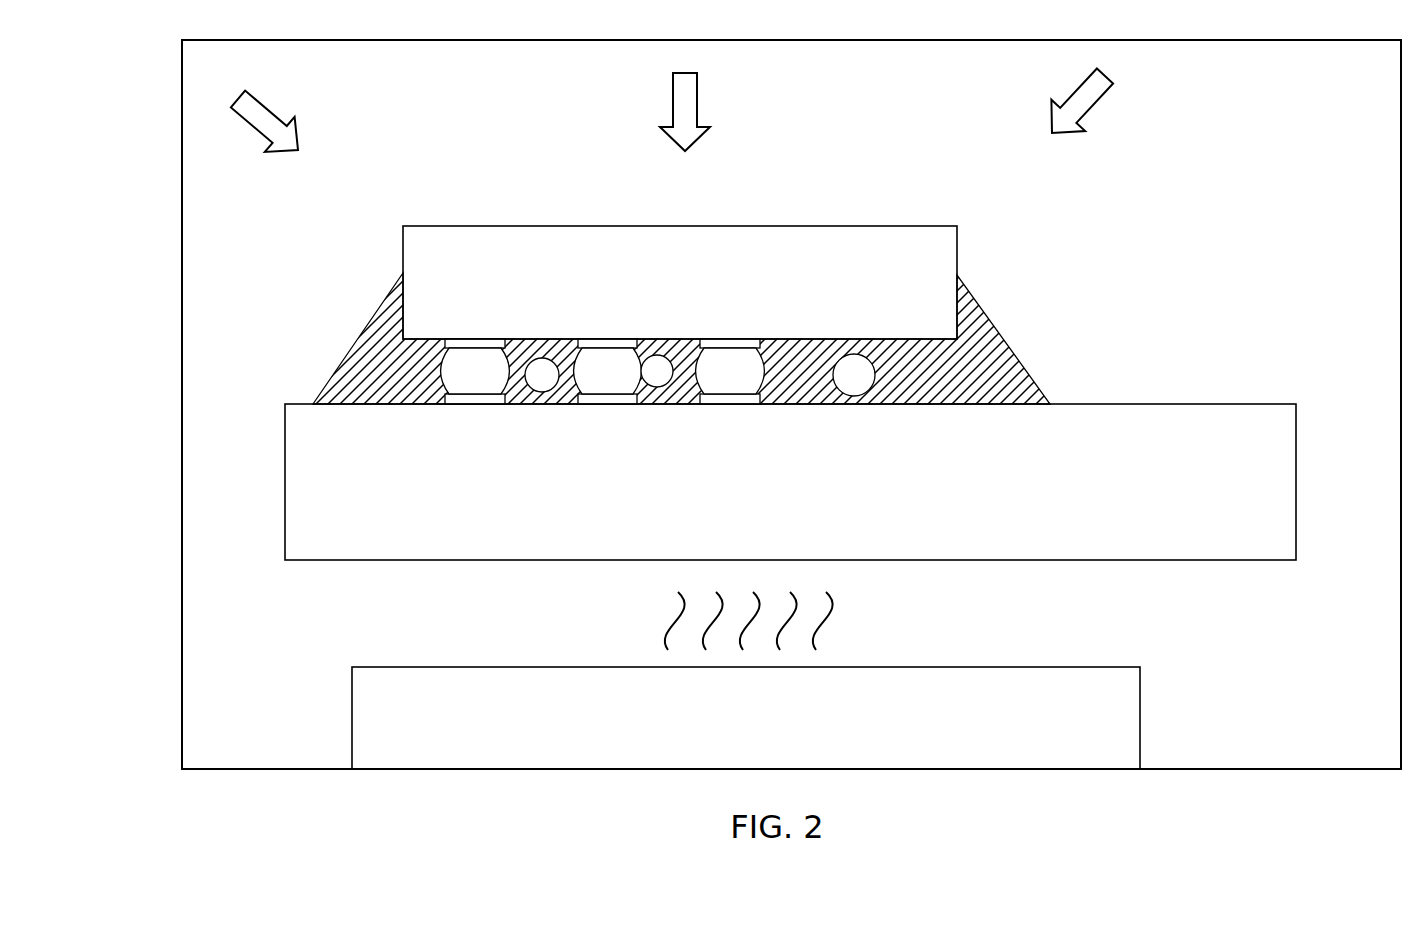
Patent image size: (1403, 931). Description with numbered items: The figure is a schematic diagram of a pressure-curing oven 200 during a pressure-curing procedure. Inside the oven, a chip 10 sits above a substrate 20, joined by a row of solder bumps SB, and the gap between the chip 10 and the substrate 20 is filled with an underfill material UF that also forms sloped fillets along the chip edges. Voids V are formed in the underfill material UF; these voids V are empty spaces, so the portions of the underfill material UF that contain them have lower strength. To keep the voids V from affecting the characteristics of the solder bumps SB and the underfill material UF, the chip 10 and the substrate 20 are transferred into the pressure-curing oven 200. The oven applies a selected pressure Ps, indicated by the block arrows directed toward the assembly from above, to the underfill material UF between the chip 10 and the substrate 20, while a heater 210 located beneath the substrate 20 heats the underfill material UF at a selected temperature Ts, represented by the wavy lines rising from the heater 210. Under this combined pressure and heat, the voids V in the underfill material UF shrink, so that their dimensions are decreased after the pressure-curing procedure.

The pressure-curing oven 200 is at (178, 299).
The chip 10 is at (664, 300).
The substrate 20 is at (774, 503).
The heater 210 is at (722, 738).
The solder bumps SB is at (473, 368).
The voids V is at (540, 378).
The underfill material UF is at (1032, 363).
The selected pressure Ps is at (672, 132).
The selected temperature Ts is at (726, 621).